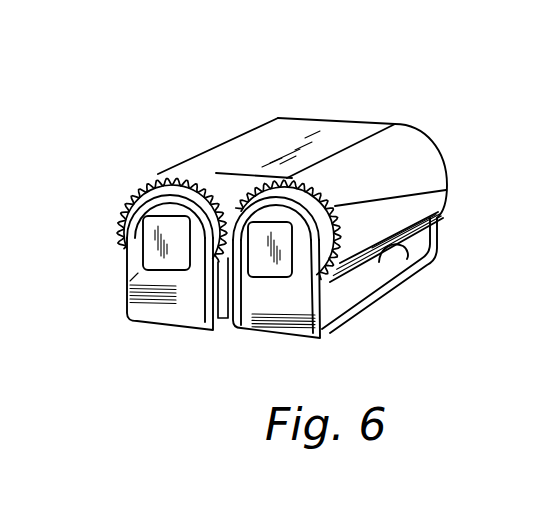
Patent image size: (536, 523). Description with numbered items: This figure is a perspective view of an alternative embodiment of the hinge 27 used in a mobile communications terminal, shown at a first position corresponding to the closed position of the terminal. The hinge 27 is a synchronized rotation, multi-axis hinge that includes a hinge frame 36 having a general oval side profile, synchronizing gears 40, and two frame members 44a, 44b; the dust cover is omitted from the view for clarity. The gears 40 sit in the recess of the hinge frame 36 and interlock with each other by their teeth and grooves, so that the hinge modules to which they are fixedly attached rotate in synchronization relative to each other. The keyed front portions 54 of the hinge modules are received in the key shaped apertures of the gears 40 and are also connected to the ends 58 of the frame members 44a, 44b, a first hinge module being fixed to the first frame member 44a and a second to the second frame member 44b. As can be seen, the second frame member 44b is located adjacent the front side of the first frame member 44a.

The hinge 27 is at (405, 84).
The hinge frame 36 is at (320, 140).
The synchronizing gears 40 is at (162, 177).
The first frame member 44a is at (272, 303).
The second frame member 44b is at (173, 306).
The front portions 54 is at (154, 235).
The ends 58 is at (446, 190).